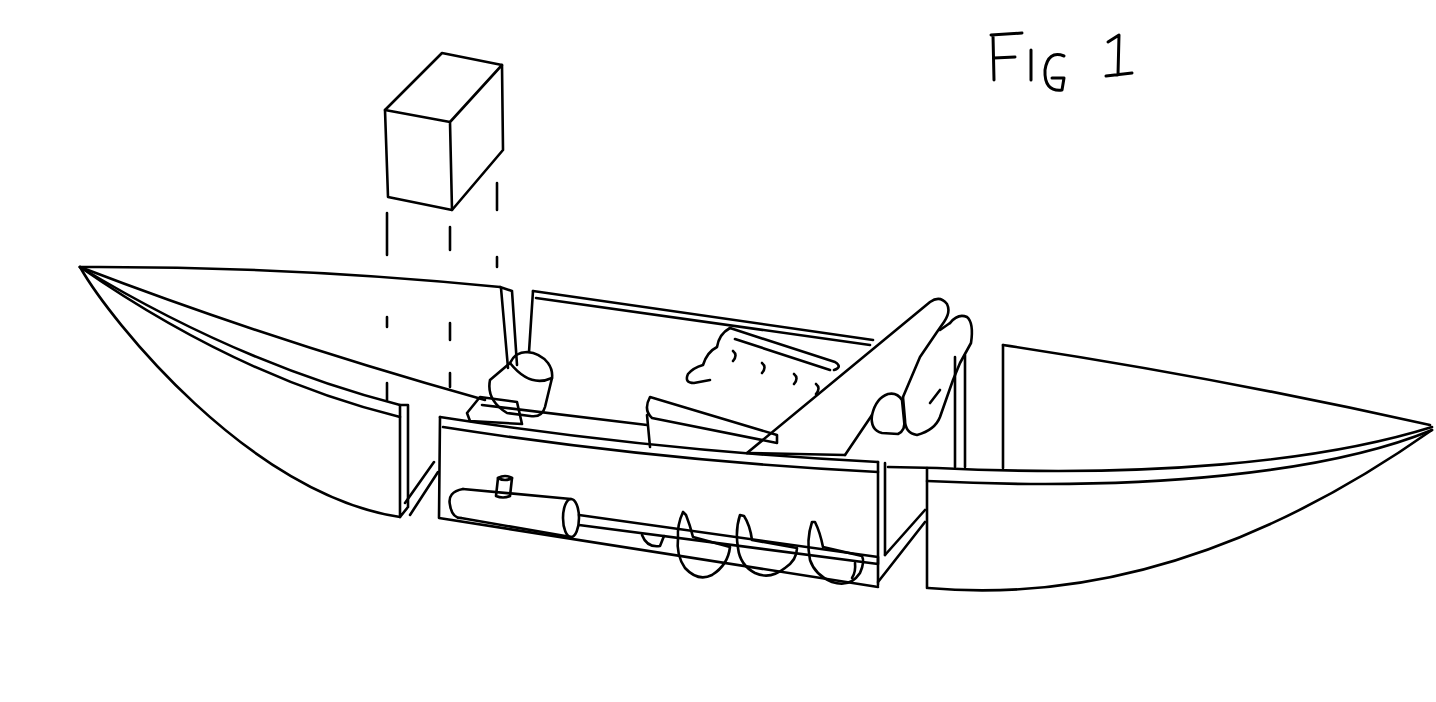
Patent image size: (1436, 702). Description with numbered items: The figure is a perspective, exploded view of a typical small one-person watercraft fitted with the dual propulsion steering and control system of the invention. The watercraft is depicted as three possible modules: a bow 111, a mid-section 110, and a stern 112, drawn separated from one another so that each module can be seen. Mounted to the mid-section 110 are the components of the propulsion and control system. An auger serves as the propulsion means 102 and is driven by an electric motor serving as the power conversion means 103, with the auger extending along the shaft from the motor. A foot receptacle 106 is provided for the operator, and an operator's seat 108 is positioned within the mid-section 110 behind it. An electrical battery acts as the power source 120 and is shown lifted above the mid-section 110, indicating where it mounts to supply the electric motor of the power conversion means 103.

The propulsion means 102 is at (762, 572).
The power conversion means 103 is at (482, 516).
The foot receptacle 106 is at (541, 372).
The operator's seat 108 is at (672, 396).
The mid-section 110 is at (584, 316).
The bow 111 is at (272, 474).
The stern 112 is at (1118, 561).
The power source 120 is at (483, 121).